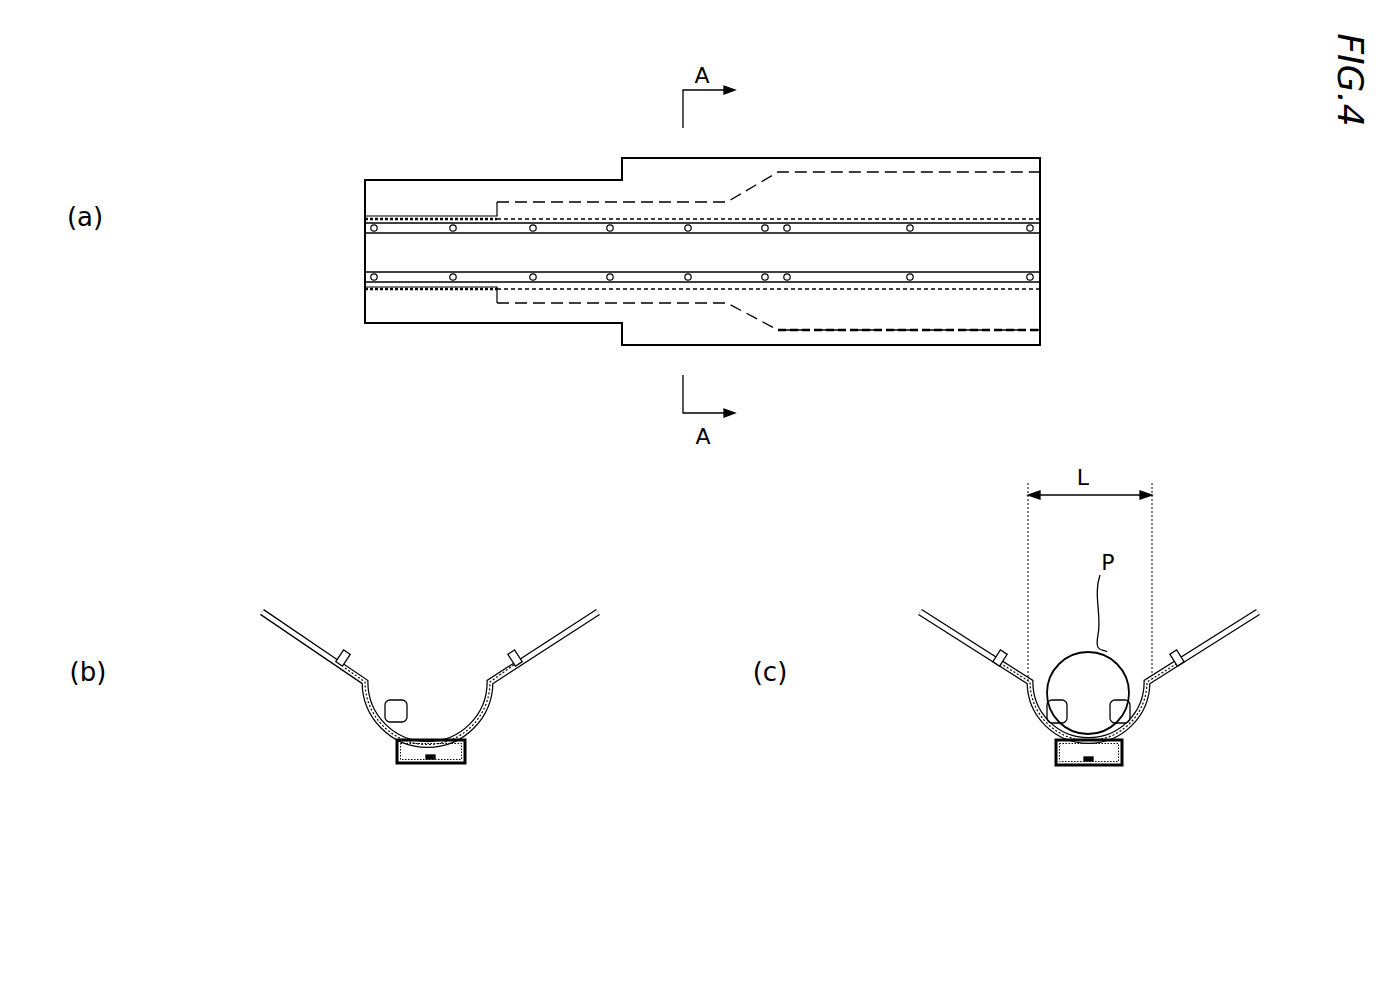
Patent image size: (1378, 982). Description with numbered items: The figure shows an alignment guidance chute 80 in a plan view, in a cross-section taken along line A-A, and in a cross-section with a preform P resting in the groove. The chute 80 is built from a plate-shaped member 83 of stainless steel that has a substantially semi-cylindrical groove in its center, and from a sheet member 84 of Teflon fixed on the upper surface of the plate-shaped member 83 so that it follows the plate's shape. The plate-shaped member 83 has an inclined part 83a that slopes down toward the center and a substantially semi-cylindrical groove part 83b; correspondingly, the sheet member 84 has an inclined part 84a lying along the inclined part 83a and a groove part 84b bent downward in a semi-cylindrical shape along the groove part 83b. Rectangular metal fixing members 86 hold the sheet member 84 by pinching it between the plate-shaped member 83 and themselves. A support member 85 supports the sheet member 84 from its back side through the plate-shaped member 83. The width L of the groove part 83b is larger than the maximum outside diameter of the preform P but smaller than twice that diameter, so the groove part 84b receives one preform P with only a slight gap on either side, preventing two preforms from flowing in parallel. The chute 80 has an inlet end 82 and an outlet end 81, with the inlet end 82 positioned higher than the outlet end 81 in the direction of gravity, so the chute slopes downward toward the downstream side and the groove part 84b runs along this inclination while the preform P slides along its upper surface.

The alignment guidance chute 80 is at (775, 142).
The outlet end 81 is at (364, 205).
The inlet end 82 is at (1040, 190).
The plate-shaped member 83 is at (942, 193).
The inclined part 83a is at (342, 678).
The groove part 83b is at (373, 697).
The sheet member 84 is at (455, 183).
The inclined part 84a is at (290, 623).
The groove part 84b is at (448, 730).
The support member 85 is at (405, 765).
The fixing members 86 is at (862, 227).